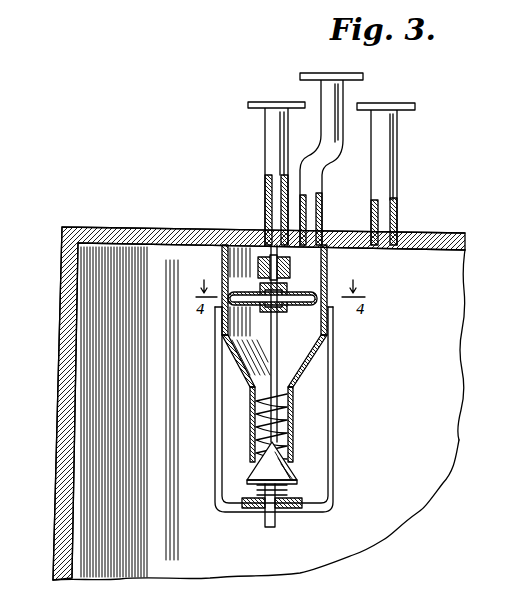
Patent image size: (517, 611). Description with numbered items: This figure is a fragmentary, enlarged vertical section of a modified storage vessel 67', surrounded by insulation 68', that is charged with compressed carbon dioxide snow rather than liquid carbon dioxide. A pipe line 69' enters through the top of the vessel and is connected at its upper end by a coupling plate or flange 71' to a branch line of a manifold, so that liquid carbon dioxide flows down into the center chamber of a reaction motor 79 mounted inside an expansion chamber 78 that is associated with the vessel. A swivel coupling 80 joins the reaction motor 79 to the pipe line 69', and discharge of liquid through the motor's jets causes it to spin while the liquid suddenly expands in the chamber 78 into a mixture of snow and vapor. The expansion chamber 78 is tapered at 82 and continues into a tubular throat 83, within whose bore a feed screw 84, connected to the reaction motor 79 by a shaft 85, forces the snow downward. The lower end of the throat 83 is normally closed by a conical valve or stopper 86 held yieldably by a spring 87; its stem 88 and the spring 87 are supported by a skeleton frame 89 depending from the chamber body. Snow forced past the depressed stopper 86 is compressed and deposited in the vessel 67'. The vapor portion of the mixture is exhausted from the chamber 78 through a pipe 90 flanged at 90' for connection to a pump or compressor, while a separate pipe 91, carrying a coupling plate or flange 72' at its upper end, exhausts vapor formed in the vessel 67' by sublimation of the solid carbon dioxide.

The storage vessel 67' is at (246, 403).
The insulation 68' is at (103, 412).
The pipe line 69' is at (252, 176).
The coupling plate or flange 71' is at (257, 107).
The coupling plate or flange 72' is at (404, 113).
The expansion chamber 78 is at (222, 266).
The reaction motor 79 is at (287, 309).
The swivel coupling 80 is at (290, 272).
The tapered portion 82 is at (248, 363).
The tubular throat 83 is at (290, 426).
The feed screw 84 is at (252, 417).
The shaft 85 is at (276, 368).
The conical valve or stopper 86 is at (293, 463).
The spring 87 is at (257, 490).
The stem 88 is at (278, 524).
The skeleton frame 89 is at (333, 449).
The pipe 90 is at (327, 162).
The flange 90' is at (347, 77).
The pipe 91 is at (397, 181).